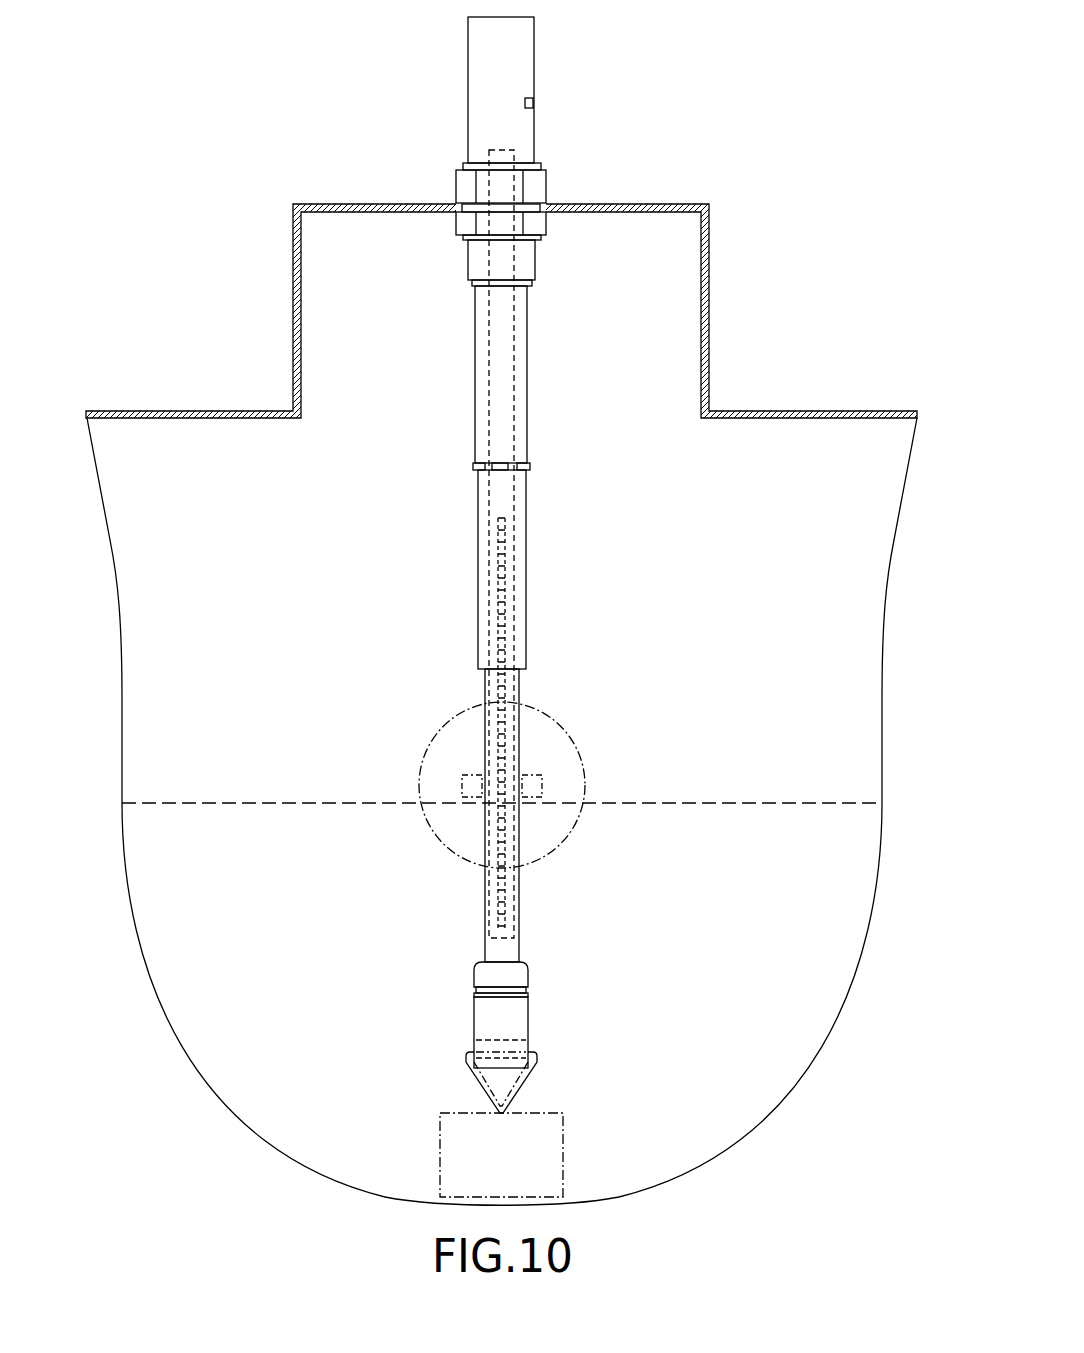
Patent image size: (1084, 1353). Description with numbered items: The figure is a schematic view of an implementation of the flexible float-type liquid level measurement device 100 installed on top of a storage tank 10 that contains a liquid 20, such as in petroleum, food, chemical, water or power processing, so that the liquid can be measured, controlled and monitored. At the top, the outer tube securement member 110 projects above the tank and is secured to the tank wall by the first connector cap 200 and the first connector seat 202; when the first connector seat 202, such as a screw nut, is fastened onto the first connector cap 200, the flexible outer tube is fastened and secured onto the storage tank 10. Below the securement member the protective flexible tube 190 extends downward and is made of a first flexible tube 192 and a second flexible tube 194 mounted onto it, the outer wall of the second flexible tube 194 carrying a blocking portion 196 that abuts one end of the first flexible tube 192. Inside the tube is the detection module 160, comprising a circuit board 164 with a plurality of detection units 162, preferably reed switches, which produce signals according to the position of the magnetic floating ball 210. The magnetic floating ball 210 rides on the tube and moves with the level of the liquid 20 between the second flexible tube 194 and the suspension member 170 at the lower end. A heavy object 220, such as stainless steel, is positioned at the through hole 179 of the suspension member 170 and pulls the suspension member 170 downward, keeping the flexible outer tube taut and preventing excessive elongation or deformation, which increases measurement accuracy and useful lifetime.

The storage tank 10 is at (709, 297).
The liquid 20 is at (742, 805).
The flexible float-type liquid level measurement device 100 is at (504, 565).
The outer tube securement member 110 is at (473, 118).
The detection module 160 is at (420, 724).
The detection unit 162 is at (498, 578).
The circuit board 164 is at (490, 597).
The suspension member 170 is at (527, 1037).
The through hole 179 is at (500, 1045).
The protective flexible tube 190 is at (520, 477).
The first flexible tube 192 is at (527, 405).
The second flexible tube 194 is at (547, 569).
The blocking portion 196 is at (473, 465).
The first connector cap 200 is at (462, 185).
The first connector seat 202 is at (462, 222).
The magnetic floating ball 210 is at (567, 769).
The heavy object 220 is at (555, 1155).